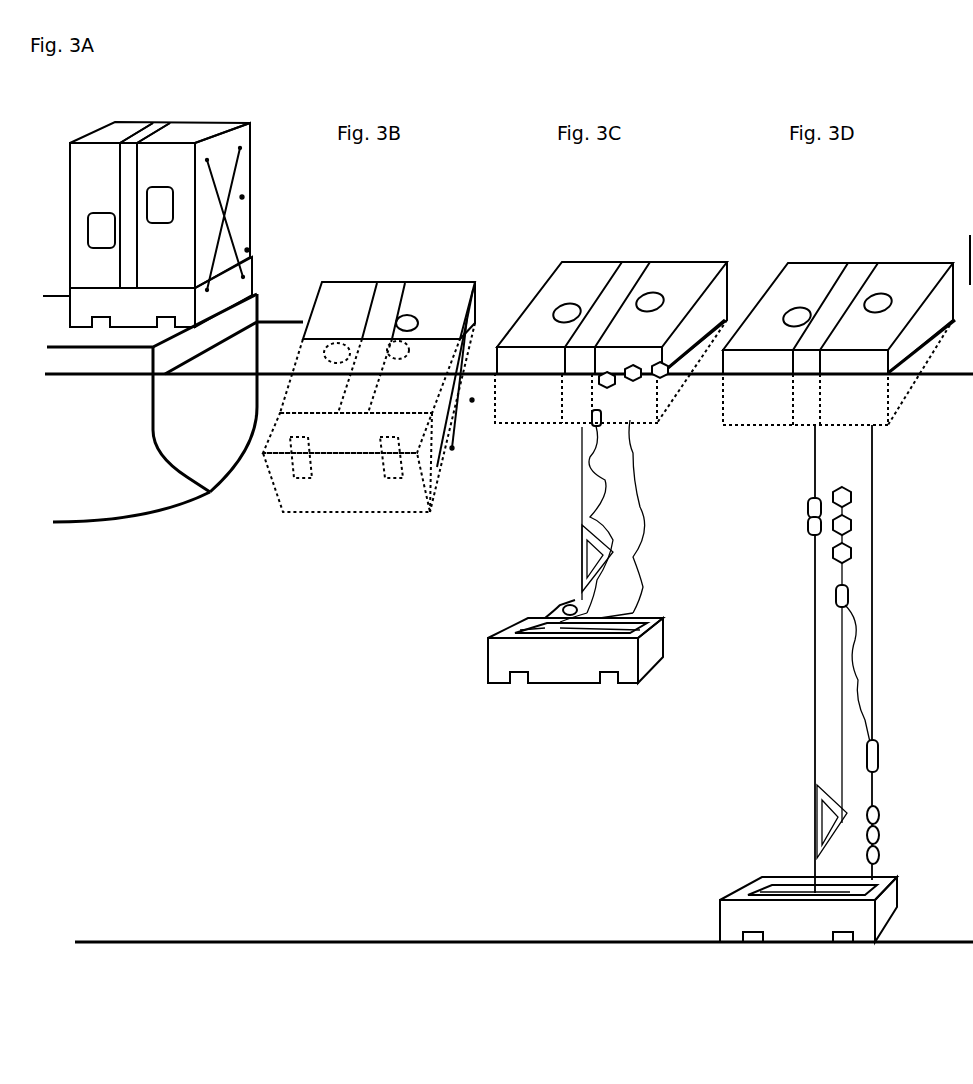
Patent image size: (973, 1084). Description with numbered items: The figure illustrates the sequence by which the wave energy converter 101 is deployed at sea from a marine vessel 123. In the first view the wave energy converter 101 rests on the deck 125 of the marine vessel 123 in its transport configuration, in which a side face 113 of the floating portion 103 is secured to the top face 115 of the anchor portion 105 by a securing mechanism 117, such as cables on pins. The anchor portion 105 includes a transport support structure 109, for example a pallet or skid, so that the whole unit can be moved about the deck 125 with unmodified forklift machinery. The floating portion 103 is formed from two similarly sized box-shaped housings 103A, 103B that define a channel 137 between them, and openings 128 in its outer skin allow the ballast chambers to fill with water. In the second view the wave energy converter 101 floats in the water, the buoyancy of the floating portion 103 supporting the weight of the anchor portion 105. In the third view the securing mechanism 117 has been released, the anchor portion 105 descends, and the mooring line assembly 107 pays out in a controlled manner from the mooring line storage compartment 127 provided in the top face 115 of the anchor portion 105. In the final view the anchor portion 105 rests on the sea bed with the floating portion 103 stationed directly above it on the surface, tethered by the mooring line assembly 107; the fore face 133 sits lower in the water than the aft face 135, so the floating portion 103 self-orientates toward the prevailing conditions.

In FIG. 3A, the wave energy converter 101 is at (58, 157).
In FIG. 3A, the floating portion 103 is at (83, 203).
In FIG. 3B, the floating portion 103 is at (350, 295).
In FIG. 3C, the floating portion 103 is at (580, 270).
In FIG. 3D, the floating portion 103 is at (807, 280).
In FIG. 3A, the box-shaped housing 103A is at (118, 127).
In FIG. 3B, the box-shaped housing 103A is at (342, 293).
In FIG. 3C, the box-shaped housing 103A is at (558, 287).
In FIG. 3D, the box-shaped housing 103A is at (775, 290).
In FIG. 3A, the box-shaped housing 103B is at (213, 132).
In FIG. 3B, the box-shaped housing 103B is at (442, 297).
In FIG. 3C, the box-shaped housing 103B is at (690, 283).
In FIG. 3D, the box-shaped housing 103B is at (913, 278).
In FIG. 3A, the anchor portion 105 is at (78, 310).
In FIG. 3B, the anchor portion 105 is at (342, 497).
In FIG. 3C, the anchor portion 105 is at (577, 677).
In FIG. 3D, the anchor portion 105 is at (720, 912).
In FIG. 3C, the mooring line assembly 107 is at (655, 504).
In FIG. 3D, the mooring line assembly 107 is at (882, 628).
In FIG. 3A, the transport support structure 109 is at (77, 300).
In FIG. 3B, the transport support structure 109 is at (360, 498).
In FIG. 3C, the transport support structure 109 is at (653, 647).
In FIG. 3D, the transport support structure 109 is at (720, 923).
In FIG. 3C, the side face 113 is at (547, 410).
In FIG. 3C, the top face 115 is at (510, 627).
In FIG. 3A, the securing mechanism 117 is at (243, 187).
In FIG. 3A, the marine vessel 123 is at (138, 492).
In FIG. 3A, the deck 125 is at (127, 337).
In FIG. 3C, the mooring line storage compartment 127 is at (543, 600).
In FIG. 3D, the mooring line storage compartment 127 is at (793, 890).
In FIG. 3A, the openings 128 is at (244, 198).
In FIG. 3B, the openings 128 is at (472, 400).
In FIG. 3C, the fore face 133 is at (638, 410).
In FIG. 3D, the fore face 133 is at (872, 407).
In FIG. 3C, the aft face 135 is at (612, 283).
In FIG. 3D, the aft face 135 is at (839, 283).
In FIG. 3A, the channel 137 is at (163, 123).
In FIG. 3B, the channel 137 is at (382, 298).
In FIG. 3C, the channel 137 is at (633, 277).
In FIG. 3D, the channel 137 is at (860, 280).